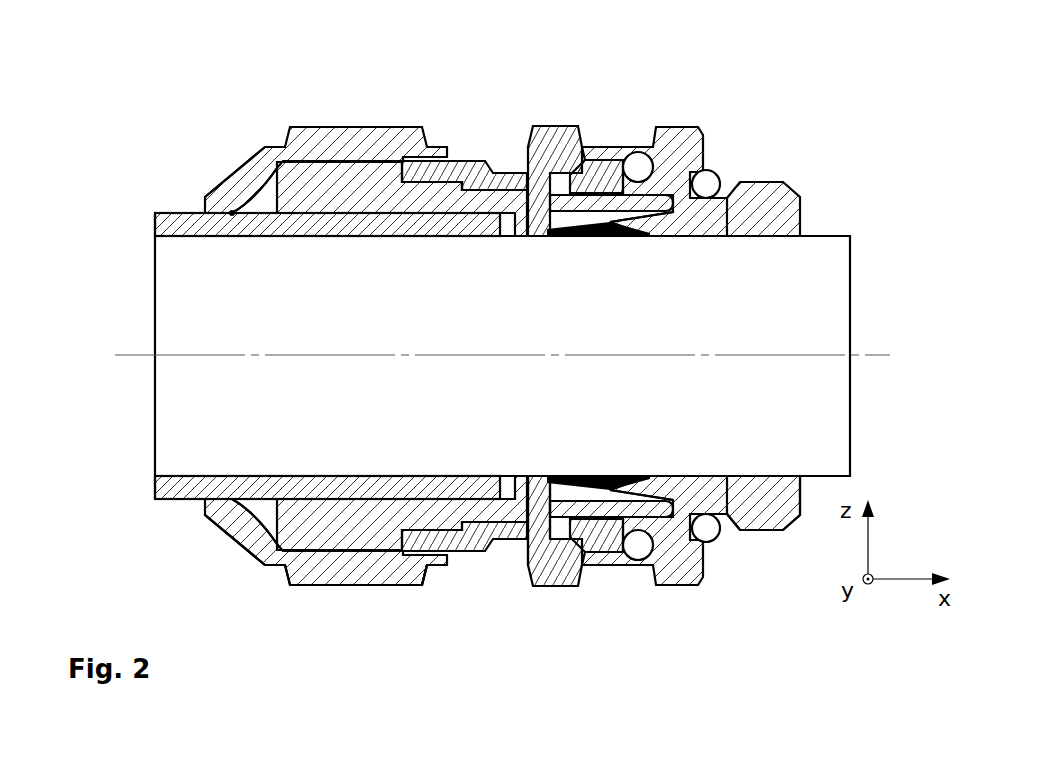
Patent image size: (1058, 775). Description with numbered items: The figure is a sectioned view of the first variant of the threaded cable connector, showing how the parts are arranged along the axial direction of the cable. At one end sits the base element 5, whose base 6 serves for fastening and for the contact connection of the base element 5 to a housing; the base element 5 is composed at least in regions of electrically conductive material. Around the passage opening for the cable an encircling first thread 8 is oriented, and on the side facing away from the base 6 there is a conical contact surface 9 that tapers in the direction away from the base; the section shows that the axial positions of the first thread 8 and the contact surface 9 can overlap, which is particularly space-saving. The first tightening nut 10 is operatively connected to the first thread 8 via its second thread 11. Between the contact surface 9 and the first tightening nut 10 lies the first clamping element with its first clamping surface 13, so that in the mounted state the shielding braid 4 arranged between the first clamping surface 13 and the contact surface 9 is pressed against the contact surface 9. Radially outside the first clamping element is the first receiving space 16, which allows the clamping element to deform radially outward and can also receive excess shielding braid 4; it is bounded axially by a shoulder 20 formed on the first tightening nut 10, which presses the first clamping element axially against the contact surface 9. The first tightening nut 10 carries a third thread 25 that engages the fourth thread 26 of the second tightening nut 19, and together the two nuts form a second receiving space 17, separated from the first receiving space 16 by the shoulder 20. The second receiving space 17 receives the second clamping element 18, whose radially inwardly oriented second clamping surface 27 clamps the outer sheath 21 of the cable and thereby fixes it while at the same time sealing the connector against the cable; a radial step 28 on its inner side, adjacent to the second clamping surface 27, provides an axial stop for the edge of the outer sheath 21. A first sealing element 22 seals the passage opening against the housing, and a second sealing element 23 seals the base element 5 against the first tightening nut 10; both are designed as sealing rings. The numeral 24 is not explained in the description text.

The shielding braid 4 is at (572, 175).
The base element 5 is at (758, 207).
The base 6 is at (679, 145).
The first thread 8 is at (628, 494).
The contact surface 9 is at (697, 553).
The first tightening nut 10 is at (546, 195).
The second thread 11 is at (641, 444).
The first clamping surface 13 is at (653, 549).
The first receiving space 16 is at (584, 523).
The second receiving space 17 is at (263, 511).
The second clamping element 18 is at (444, 193).
The second tightening nut 19 is at (378, 155).
The shoulder 20 is at (539, 500).
The outer sheath 21 is at (293, 157).
The first sealing element 22 is at (630, 152).
The second sealing element 23 is at (708, 170).
The pipe 24 is at (779, 355).
The third thread 25 is at (426, 562).
The fourth thread 26 is at (358, 621).
The second clamping surface 27 is at (232, 213).
The radial step 28 is at (505, 190).